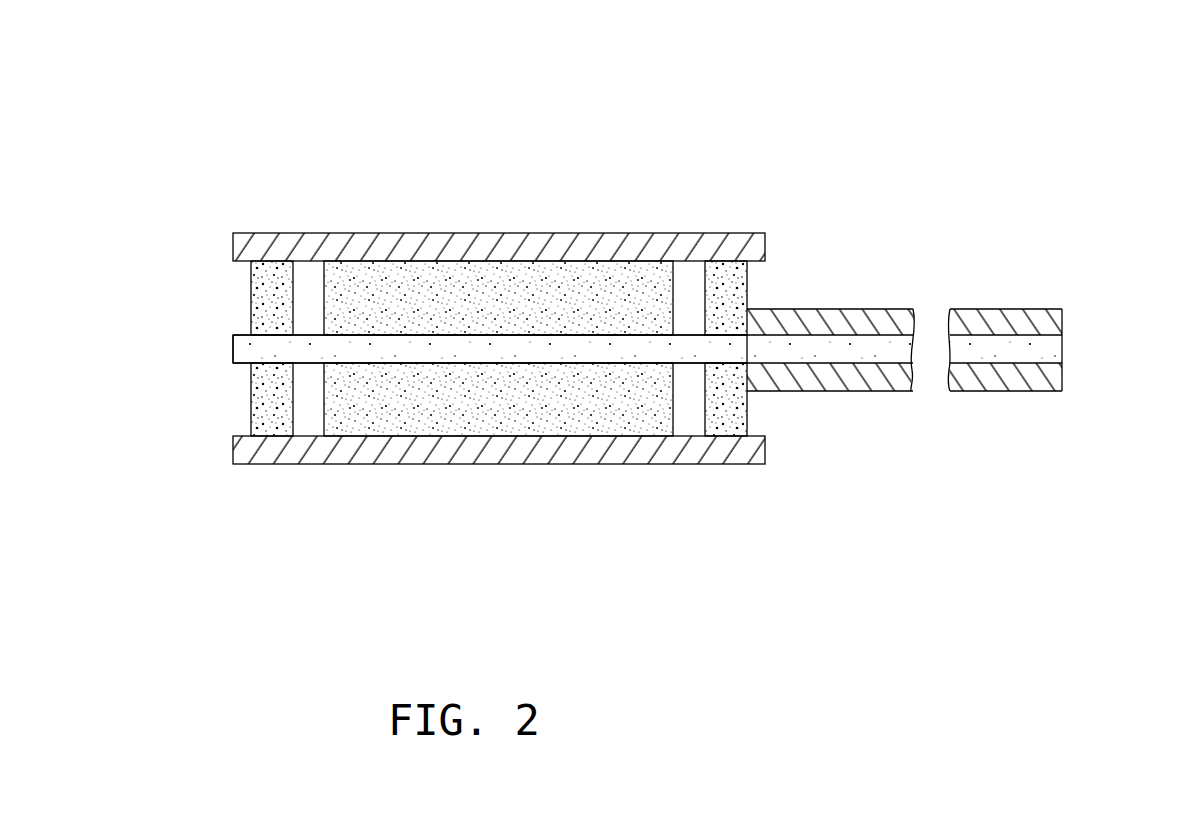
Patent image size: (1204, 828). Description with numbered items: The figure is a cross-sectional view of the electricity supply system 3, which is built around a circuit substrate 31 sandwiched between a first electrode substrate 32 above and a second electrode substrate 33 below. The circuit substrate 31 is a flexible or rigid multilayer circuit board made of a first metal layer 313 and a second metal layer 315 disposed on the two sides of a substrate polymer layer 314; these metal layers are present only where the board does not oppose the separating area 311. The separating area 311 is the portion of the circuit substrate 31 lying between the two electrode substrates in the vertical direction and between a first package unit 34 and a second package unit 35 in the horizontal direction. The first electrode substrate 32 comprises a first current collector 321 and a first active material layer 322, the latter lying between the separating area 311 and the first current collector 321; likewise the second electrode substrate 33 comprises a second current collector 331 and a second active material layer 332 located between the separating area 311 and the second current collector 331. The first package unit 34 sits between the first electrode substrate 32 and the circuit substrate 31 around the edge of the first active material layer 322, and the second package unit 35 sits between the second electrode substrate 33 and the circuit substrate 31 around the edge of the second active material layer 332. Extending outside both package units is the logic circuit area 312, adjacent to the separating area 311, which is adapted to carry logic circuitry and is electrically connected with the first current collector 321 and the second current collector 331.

The electricity supply system 3 is at (181, 120).
The circuit substrate 31 is at (684, 233).
The separating area 311 is at (742, 364).
The logic circuit area 312 is at (684, 323).
The first metal layer 313 is at (1058, 322).
The substrate polymer layer 314 is at (1052, 352).
The second metal layer 315 is at (941, 380).
The first electrode substrate 32 is at (709, 188).
The first current collector 321 is at (640, 248).
The first active material layer 322 is at (377, 273).
The second electrode substrate 33 is at (709, 336).
The second current collector 331 is at (607, 452).
The second active material layer 332 is at (372, 415).
The first package unit 34 is at (270, 302).
The second package unit 35 is at (267, 401).